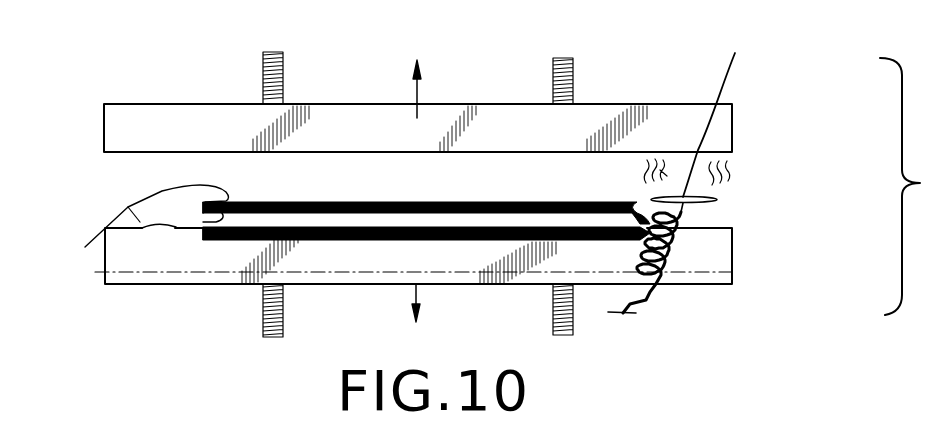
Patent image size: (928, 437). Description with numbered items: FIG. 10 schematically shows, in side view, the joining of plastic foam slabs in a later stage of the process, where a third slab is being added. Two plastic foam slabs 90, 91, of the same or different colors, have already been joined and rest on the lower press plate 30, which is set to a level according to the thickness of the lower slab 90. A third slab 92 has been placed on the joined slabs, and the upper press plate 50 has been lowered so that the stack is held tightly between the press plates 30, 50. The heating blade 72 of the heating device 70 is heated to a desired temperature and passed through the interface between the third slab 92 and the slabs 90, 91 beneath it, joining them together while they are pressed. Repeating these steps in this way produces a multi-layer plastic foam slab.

The upper press plate 50 is at (477, 128).
The lower press plate 30 is at (478, 285).
The third slab 92 is at (395, 203).
The lower plastic foam slab 90 is at (363, 240).
The upper plastic foam slab 91 is at (233, 222).
The heating device 70 is at (730, 209).
The heating blade 72 is at (729, 104).